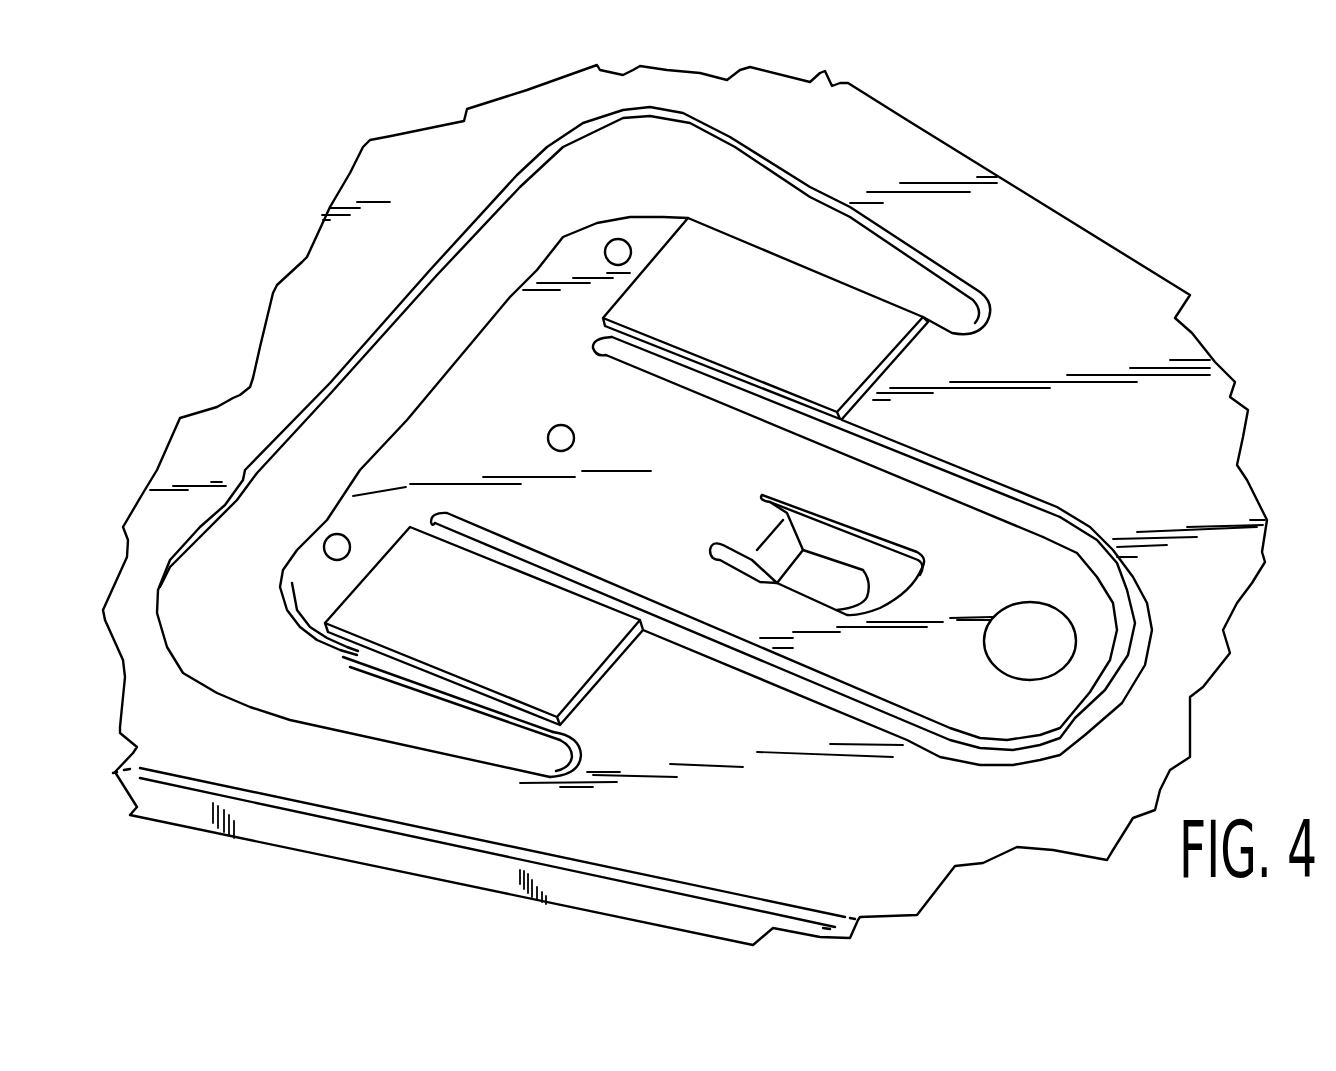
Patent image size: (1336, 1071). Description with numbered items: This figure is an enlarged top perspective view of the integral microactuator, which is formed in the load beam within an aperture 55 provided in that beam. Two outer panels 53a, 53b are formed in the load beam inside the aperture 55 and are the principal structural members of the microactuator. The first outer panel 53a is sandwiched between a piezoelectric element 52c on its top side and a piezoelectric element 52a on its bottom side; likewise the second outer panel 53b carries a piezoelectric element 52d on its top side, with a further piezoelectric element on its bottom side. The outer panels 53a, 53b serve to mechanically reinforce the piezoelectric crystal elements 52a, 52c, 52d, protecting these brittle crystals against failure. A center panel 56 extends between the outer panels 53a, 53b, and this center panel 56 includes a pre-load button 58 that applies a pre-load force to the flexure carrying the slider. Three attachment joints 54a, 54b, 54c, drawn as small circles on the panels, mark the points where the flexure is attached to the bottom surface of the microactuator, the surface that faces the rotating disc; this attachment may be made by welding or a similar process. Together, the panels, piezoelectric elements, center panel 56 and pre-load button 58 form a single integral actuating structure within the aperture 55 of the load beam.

The piezoelectric element 52a is at (862, 450).
The piezoelectric element 52c is at (695, 237).
The piezoelectric element 52d is at (360, 620).
The outer panel 53a is at (757, 388).
The outer panel 53b is at (427, 688).
The attachment joint 54a is at (605, 250).
The attachment joint 54b is at (550, 428).
The attachment joint 54c is at (324, 546).
The aperture 55 is at (883, 267).
The center panel 56 is at (733, 637).
The pre-load button 58 is at (1028, 660).